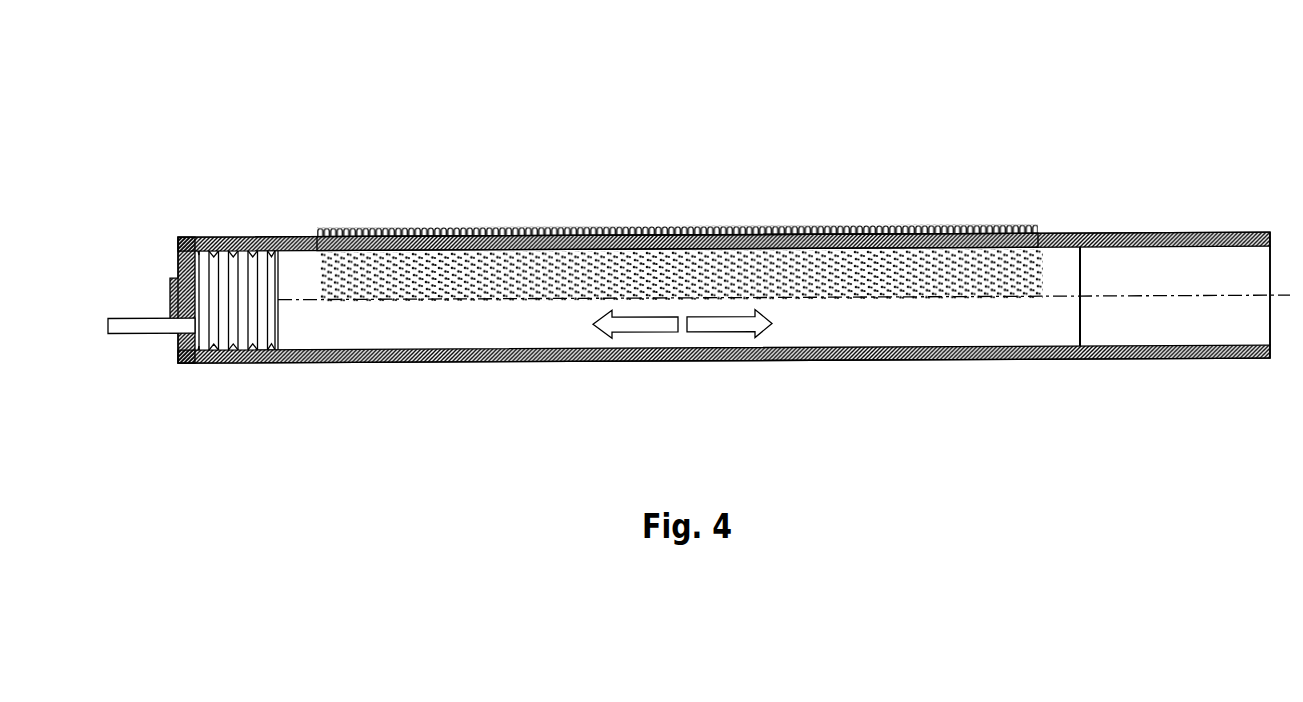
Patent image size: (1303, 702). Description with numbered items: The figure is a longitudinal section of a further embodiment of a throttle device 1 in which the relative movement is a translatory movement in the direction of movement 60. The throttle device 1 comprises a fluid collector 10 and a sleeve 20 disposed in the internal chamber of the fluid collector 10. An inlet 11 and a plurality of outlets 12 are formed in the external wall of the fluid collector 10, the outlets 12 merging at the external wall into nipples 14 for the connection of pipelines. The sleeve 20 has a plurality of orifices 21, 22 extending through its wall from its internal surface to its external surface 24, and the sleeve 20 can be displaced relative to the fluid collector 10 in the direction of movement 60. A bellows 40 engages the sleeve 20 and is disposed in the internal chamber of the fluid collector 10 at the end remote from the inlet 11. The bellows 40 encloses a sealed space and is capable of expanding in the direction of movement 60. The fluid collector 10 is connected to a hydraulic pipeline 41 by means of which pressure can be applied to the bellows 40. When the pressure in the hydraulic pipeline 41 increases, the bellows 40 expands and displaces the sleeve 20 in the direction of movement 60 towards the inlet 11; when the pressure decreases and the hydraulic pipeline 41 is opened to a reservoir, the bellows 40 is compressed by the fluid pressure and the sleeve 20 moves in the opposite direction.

The throttle device 1 is at (848, 102).
The fluid collector 10 is at (1145, 233).
The inlet 11 is at (1268, 275).
The outlets 12 is at (927, 222).
The nipples 14 is at (729, 232).
The sleeve 20 is at (948, 325).
The orifices 21 is at (520, 230).
The orifices 22 is at (561, 230).
The external surface 24 is at (1063, 288).
The bellows 40 is at (230, 280).
The hydraulic pipeline 41 is at (128, 335).
The direction of movement 60 is at (720, 325).